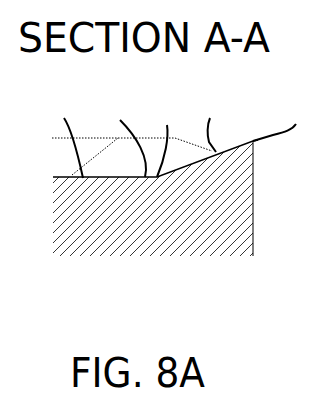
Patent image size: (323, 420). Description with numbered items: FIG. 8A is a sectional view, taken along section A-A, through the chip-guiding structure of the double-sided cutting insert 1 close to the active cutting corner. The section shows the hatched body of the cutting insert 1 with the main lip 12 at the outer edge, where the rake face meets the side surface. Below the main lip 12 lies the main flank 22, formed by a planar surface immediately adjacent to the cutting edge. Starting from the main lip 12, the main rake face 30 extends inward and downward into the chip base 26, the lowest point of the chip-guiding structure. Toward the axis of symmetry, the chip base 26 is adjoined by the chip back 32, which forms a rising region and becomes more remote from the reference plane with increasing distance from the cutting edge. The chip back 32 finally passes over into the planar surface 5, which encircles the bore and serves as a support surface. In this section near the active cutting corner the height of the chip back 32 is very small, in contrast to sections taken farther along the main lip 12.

The cutting insert 1 is at (177, 242).
The planar surface 5 is at (64, 118).
The main lip 12 is at (296, 124).
The main flank 22 is at (253, 225).
The chip base 26 is at (167, 125).
The main rake face 30 is at (210, 118).
The chip back 32 is at (119, 140).